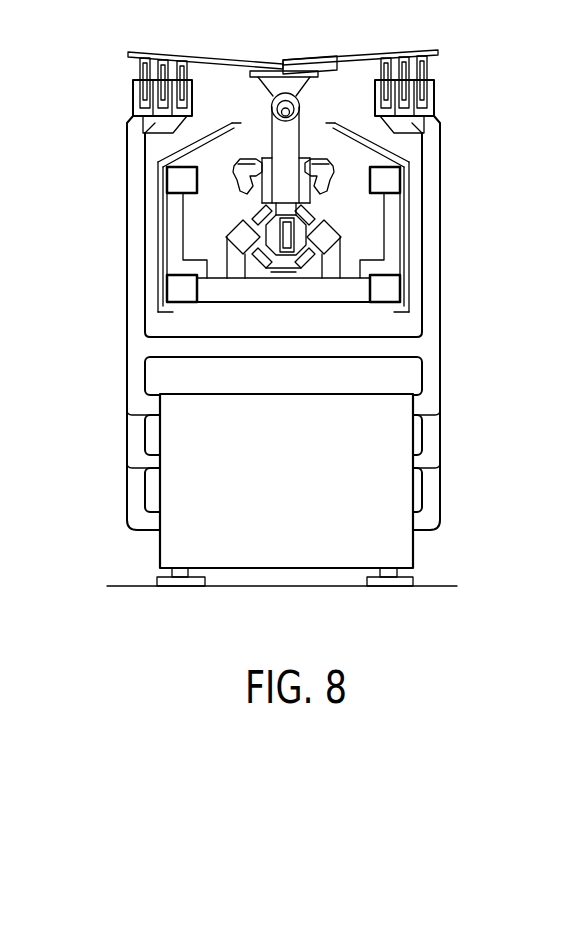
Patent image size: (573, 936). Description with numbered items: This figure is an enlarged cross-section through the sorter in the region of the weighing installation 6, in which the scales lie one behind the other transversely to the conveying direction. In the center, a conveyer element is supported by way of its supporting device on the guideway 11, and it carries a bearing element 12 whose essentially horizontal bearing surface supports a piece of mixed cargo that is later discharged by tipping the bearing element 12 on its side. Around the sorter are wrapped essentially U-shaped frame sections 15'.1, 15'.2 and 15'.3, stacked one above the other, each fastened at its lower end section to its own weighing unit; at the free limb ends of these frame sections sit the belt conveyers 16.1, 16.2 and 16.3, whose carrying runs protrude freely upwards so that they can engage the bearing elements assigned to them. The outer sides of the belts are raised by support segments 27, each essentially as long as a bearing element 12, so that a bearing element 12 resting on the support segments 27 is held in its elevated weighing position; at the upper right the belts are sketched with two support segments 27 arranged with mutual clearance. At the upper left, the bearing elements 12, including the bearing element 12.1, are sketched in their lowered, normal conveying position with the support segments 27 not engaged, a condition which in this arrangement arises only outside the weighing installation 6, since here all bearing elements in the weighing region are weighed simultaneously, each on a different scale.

The weighing installation 6 is at (110, 431).
The guideway 11 is at (232, 228).
The bearing element 12 is at (180, 60).
The bearing element 12.1 is at (333, 60).
The belt conveyer 16.1 is at (438, 72).
The belt conveyer 16.2 is at (155, 87).
The belt conveyer 16.3 is at (374, 100).
The support segment 27 is at (425, 56).
The frame section 15'.3 is at (330, 377).
The frame section 15'.2 is at (324, 437).
The frame section 15'.1 is at (321, 495).